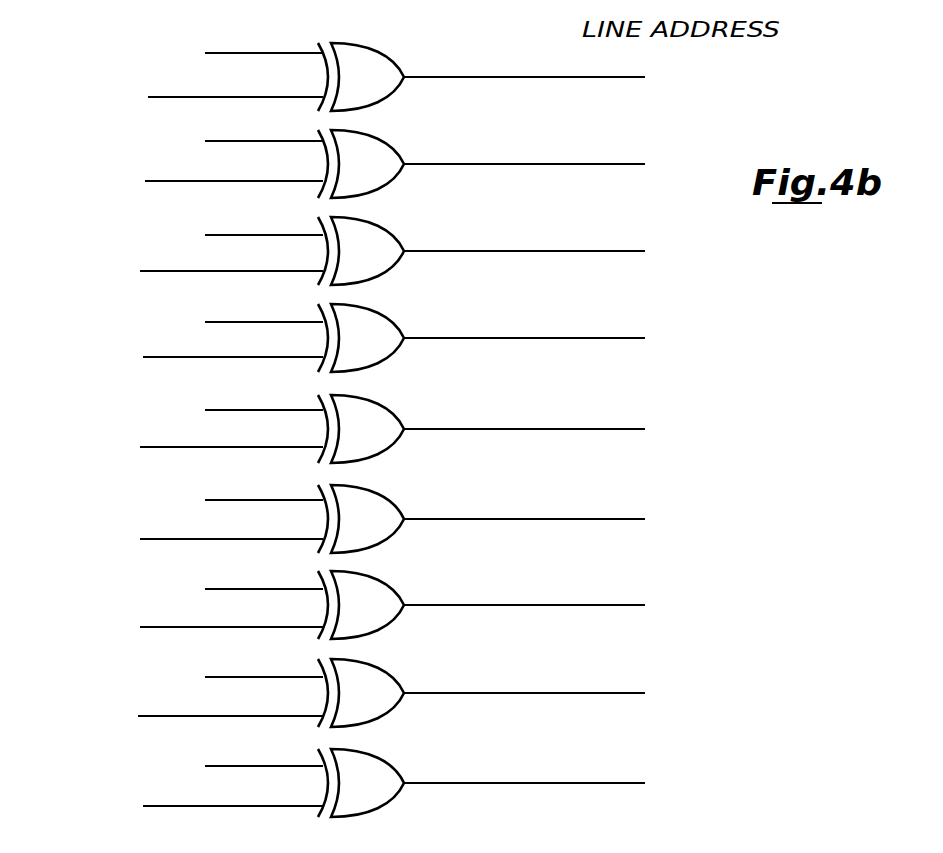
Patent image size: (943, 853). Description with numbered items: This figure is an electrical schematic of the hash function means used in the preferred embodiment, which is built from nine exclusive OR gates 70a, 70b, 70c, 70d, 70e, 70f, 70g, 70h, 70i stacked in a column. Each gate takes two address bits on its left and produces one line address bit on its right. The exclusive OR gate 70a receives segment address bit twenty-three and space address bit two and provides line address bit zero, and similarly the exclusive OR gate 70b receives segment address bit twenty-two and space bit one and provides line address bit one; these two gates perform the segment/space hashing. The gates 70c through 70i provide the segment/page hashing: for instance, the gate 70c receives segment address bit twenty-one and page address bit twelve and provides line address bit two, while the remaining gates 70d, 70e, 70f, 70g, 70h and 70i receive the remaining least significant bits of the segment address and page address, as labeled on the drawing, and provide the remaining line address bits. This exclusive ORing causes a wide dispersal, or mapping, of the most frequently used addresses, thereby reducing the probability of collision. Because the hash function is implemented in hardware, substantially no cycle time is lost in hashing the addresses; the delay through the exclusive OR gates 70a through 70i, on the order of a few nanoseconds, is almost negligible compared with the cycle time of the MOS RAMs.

The exclusive OR gate 70a is at (388, 59).
The exclusive OR gate 70b is at (388, 146).
The exclusive OR gate 70c is at (388, 233).
The exclusive OR gate 70d is at (388, 320).
The exclusive OR gate 70e is at (388, 411).
The exclusive OR gate 70f is at (388, 501).
The exclusive OR gate 70g is at (388, 587).
The exclusive OR gate 70h is at (388, 675).
The exclusive OR gate 70i is at (388, 765).